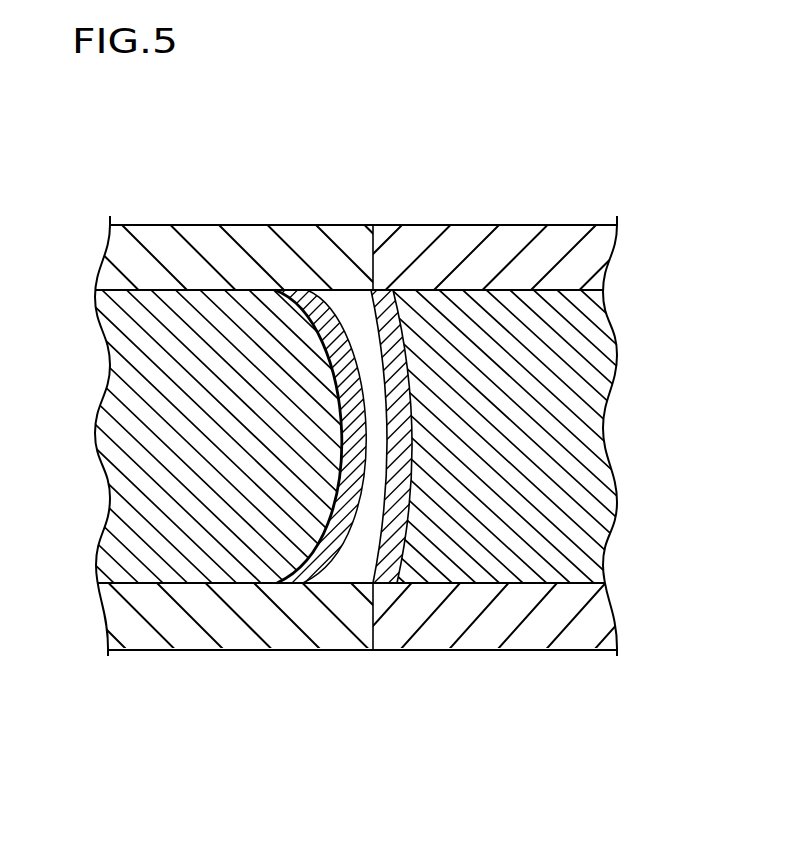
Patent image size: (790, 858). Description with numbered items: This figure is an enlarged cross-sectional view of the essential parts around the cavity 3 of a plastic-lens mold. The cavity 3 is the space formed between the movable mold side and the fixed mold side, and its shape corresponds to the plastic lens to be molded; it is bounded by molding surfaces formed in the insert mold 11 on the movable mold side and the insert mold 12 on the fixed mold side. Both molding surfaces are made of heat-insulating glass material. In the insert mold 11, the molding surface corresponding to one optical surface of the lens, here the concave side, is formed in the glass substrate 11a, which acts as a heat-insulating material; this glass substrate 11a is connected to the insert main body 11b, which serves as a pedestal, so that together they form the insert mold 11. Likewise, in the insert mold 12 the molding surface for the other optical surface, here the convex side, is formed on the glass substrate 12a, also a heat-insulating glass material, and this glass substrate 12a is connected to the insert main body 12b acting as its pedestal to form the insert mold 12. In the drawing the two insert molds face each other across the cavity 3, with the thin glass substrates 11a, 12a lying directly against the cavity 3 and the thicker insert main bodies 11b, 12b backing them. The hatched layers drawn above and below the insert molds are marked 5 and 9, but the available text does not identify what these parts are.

The cavity 3 is at (350, 315).
The upper substrate layer 5 is at (173, 260).
The lower substrate layer 9 is at (513, 267).
The insert mold 11 is at (302, 748).
The glass substrate 11a is at (305, 570).
The insert main body 11b is at (190, 550).
The insert mold 12 is at (422, 748).
The glass substrate 12a is at (387, 570).
The insert main body 12b is at (522, 563).